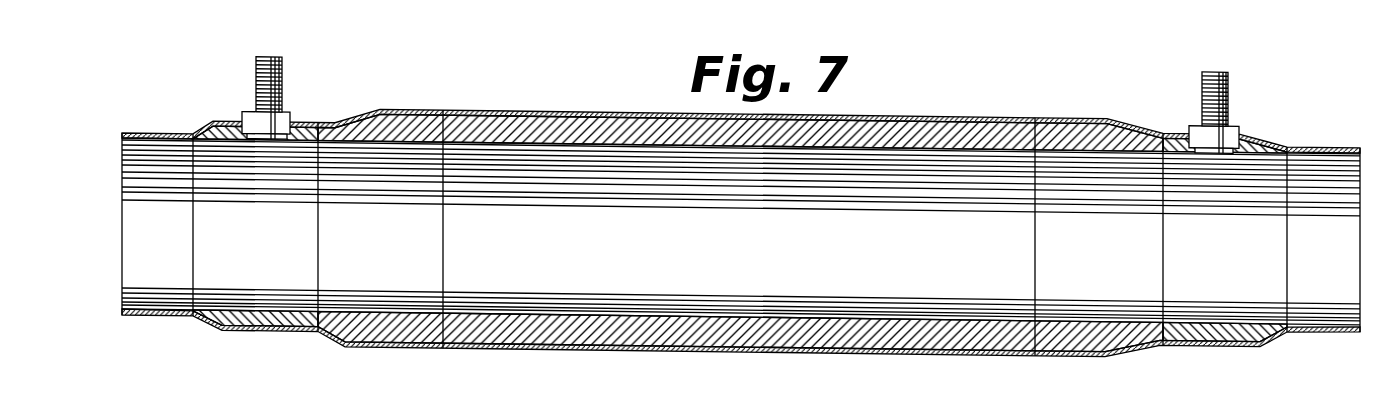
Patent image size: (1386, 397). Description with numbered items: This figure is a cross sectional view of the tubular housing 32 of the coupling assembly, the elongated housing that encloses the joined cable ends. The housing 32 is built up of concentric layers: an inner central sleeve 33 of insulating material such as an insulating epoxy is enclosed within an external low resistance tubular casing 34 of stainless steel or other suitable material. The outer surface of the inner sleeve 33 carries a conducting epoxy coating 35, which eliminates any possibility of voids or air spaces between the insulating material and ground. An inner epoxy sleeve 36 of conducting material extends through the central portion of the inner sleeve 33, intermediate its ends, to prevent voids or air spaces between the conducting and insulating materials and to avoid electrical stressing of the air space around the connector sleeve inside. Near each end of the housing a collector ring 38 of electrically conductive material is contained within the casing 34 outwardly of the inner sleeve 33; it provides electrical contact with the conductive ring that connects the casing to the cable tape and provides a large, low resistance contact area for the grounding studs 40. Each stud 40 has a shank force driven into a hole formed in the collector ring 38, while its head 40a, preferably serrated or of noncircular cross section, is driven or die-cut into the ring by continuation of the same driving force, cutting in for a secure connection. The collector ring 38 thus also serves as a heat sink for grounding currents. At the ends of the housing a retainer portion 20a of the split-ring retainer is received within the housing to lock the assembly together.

The retainer portion 20a is at (741, 251).
The tubular housing 32 is at (578, 106).
The inner central sleeve 33 is at (704, 346).
The tubular casing 34 is at (918, 116).
The conducting epoxy coating 35 is at (634, 338).
The inner epoxy sleeve 36 is at (878, 318).
The collector ring 38 is at (226, 318).
The grounding stud 40 is at (256, 72).
The head of grounding stud 40a is at (232, 120).